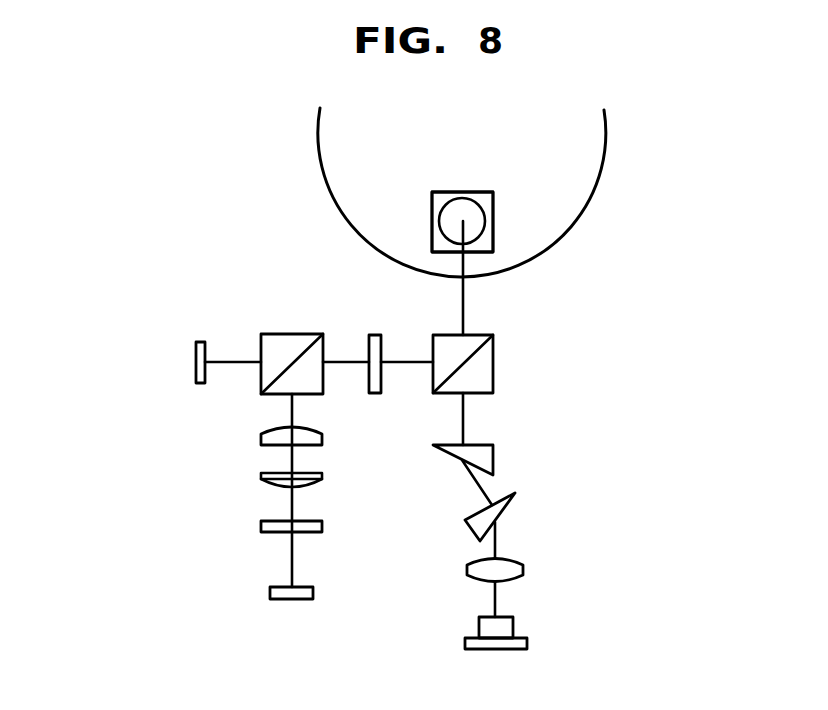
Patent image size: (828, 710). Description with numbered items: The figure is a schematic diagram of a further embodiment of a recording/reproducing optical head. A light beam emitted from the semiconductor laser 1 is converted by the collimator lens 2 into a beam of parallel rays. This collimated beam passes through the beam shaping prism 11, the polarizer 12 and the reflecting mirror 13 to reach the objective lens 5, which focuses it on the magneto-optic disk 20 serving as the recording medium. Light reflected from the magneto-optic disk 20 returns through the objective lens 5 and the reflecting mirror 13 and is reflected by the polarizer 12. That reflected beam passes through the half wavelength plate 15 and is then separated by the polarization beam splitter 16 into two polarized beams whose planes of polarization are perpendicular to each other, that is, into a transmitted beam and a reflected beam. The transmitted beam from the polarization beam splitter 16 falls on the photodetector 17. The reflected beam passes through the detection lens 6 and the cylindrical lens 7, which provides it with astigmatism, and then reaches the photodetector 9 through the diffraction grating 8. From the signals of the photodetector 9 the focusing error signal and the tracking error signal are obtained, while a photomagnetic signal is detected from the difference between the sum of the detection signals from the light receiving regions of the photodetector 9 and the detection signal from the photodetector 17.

The semiconductor laser 1 is at (513, 633).
The collimator lens 2 is at (523, 566).
The objective lens 5 is at (495, 203).
The detection lens 6 is at (261, 440).
The cylindrical lens 7 is at (261, 482).
The diffraction grating 8 is at (261, 528).
The photodetector 9 is at (270, 596).
The beam shaping prism 11 is at (522, 528).
The polarizer 12 is at (493, 362).
The reflecting mirror 13 is at (493, 242).
The half wavelength plate 15 is at (374, 334).
The polarization beam splitter 16 is at (282, 333).
The photodetector 17 is at (198, 341).
The magneto-optic disk 20 is at (318, 162).